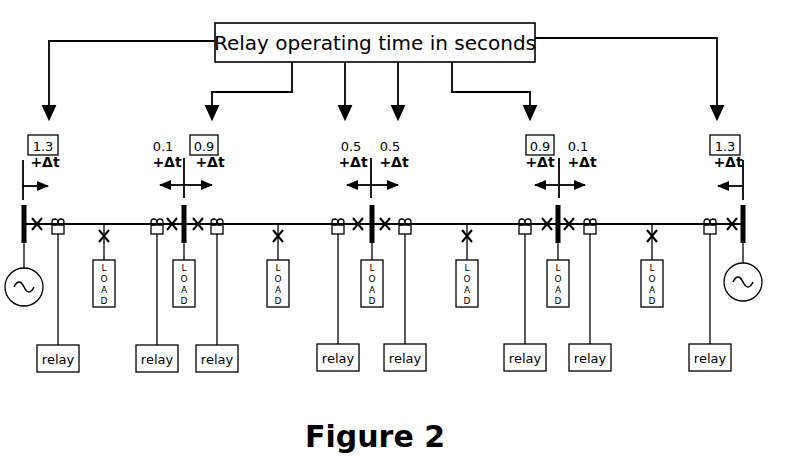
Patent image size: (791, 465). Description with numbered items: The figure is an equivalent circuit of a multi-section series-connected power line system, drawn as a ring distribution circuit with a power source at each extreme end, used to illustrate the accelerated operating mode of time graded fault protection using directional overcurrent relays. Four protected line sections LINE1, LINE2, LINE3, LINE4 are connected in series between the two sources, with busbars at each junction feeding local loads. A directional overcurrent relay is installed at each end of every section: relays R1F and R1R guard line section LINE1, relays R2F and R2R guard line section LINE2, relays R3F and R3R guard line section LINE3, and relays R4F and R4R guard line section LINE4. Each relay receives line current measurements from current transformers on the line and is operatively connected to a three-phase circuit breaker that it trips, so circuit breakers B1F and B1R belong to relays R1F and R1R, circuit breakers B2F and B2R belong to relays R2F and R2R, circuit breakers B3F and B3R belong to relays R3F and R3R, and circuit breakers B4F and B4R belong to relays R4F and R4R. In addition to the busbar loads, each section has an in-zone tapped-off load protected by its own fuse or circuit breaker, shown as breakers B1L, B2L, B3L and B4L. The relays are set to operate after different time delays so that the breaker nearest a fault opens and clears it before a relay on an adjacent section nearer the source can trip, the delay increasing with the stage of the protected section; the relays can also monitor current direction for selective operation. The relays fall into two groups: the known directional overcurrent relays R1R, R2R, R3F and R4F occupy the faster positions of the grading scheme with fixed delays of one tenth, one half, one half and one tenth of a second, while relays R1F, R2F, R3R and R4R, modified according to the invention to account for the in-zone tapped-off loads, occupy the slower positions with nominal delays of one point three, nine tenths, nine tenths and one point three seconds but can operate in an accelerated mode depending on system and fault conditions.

The three phase circuit breaker B1F is at (41, 236).
The fuse or circuit breaker for in-zone tapped-off load B1L is at (113, 265).
The three phase circuit breaker B1R is at (170, 236).
The three-phase circuit breaker B2F is at (204, 236).
The fuse or circuit breaker for in-zone tapped-off load B2L is at (288, 265).
The three-phase circuit breaker B2R is at (355, 235).
The three-phase circuit breaker B3F is at (391, 235).
The fuse or circuit breaker for in-zone tapped-off load B3L is at (477, 265).
The three-phase circuit breaker B3R is at (541, 235).
The three-phase circuit breaker B4F is at (576, 235).
The fuse or circuit breaker for in-zone tapped-off load B4L is at (662, 265).
The three-phase circuit breaker B4R is at (727, 235).
The directional overcurrent relay R1F is at (58, 305).
The directional overcurrent relay R1R is at (157, 305).
The directional overcurrent relay R2F is at (217, 305).
The directional overcurrent relay R2R is at (338, 304).
The directional overcurrent relay R3F is at (405, 304).
The directional overcurrent relay R3R is at (525, 304).
The directional overcurrent relay R4F is at (590, 304).
The directional overcurrent relay R4R is at (710, 304).
The protected line section LINE1 is at (110, 212).
The protected line section LINE2 is at (280, 211).
The protected line section LINE3 is at (465, 211).
The protected line section LINE4 is at (650, 210).